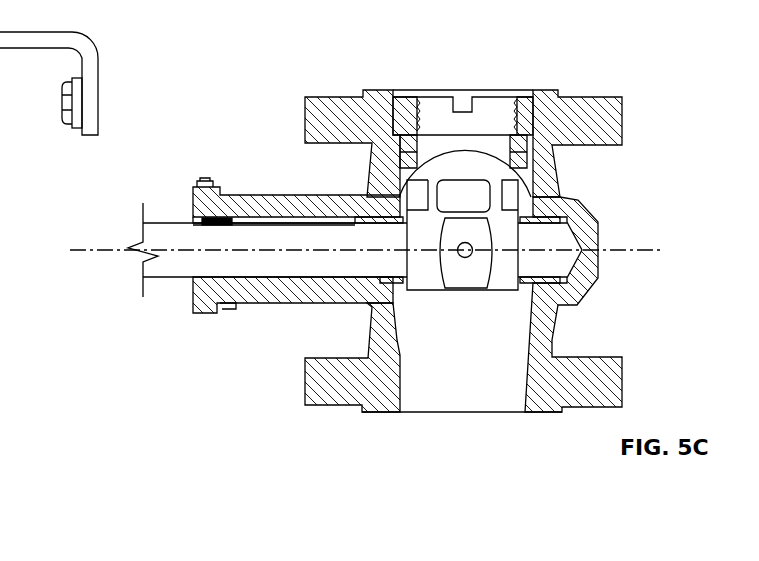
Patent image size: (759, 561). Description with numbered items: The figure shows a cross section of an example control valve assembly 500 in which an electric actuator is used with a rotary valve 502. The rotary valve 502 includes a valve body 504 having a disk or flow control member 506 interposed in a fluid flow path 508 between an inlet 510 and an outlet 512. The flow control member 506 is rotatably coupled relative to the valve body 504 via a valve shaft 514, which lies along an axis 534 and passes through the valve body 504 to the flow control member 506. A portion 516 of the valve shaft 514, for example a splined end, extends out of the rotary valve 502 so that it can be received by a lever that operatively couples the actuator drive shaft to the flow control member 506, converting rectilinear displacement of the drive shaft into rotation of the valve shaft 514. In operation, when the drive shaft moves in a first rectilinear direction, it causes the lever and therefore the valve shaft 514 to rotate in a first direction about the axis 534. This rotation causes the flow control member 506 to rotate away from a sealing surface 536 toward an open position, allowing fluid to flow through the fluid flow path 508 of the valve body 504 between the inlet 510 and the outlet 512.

The control valve assembly 500 is at (248, 98).
The rotary valve 502 is at (621, 74).
The valve body 504 is at (598, 250).
The flow control member 506 is at (492, 150).
The fluid flow path 508 is at (489, 357).
The inlet 510 is at (452, 90).
The outlet 512 is at (462, 413).
The valve shaft 514 is at (345, 264).
The portion of the valve shaft 516 is at (172, 222).
The axis 534 is at (110, 250).
The sealing surface 536 is at (527, 150).